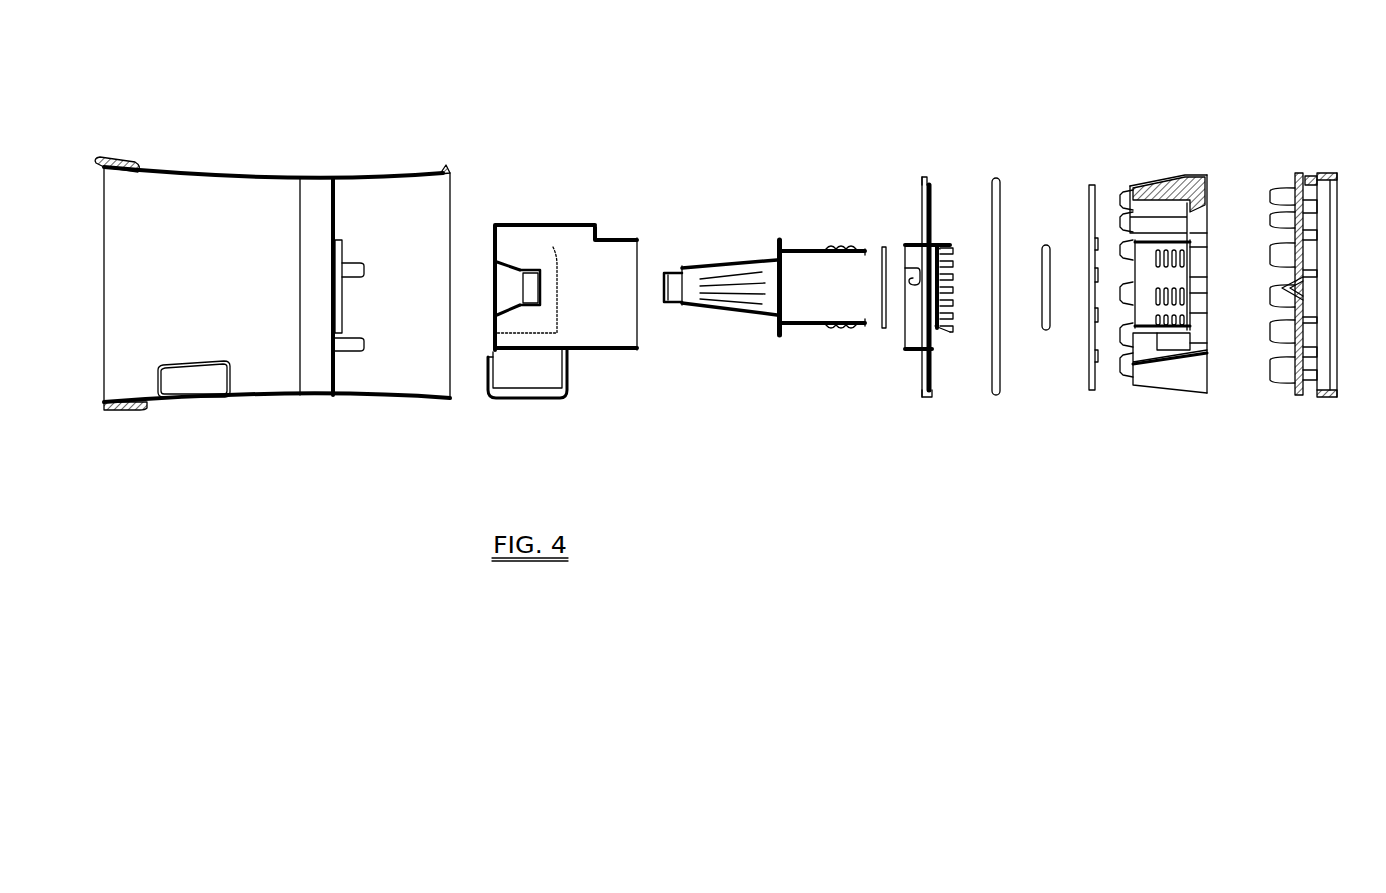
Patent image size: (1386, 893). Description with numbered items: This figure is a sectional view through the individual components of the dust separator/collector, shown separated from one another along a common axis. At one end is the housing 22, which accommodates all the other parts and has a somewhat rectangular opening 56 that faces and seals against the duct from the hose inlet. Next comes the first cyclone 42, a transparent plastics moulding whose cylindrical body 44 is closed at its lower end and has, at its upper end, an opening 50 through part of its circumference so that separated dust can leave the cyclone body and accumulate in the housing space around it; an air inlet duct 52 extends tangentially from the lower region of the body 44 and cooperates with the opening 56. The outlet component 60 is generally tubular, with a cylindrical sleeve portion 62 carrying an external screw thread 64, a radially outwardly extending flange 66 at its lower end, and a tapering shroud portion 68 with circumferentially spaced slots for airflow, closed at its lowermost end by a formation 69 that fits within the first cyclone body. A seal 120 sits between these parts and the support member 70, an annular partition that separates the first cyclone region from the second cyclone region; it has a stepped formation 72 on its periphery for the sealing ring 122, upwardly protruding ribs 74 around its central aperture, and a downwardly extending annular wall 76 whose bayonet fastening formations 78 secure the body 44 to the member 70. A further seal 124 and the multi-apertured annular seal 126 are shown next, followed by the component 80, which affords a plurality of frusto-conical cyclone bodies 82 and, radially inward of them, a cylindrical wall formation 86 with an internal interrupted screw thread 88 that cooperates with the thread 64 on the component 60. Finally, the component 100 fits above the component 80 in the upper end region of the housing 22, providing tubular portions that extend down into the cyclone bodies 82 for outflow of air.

The housing 22 is at (272, 279).
The opening 56 is at (183, 388).
The first cyclone 42 is at (575, 309).
The opening 50 is at (614, 238).
The cylindrical body 44 is at (598, 350).
The air inlet duct 52 is at (512, 370).
The outlet component 60 is at (768, 282).
The cylindrical sleeve portion 62 is at (813, 327).
The external screw thread 64 is at (837, 327).
The flange 66 is at (778, 330).
The tapering shroud portion 68 is at (727, 262).
The formation 69 is at (668, 305).
The seal 120 is at (883, 247).
The support member 70 is at (923, 260).
The stepped formation 72 is at (907, 297).
The ribs 74 is at (950, 332).
The annular wall 76 is at (910, 352).
The bayonet fastening formations 78 is at (912, 272).
The sealing ring 122 is at (1000, 185).
The seal 124 is at (1042, 257).
The seal 126 is at (1093, 365).
The component 80 is at (1188, 273).
The cyclone bodies 82 is at (1137, 227).
The cylindrical wall formation 86 is at (1145, 313).
The internal interrupted screw thread 88 is at (1183, 260).
The component 100 is at (1312, 158).